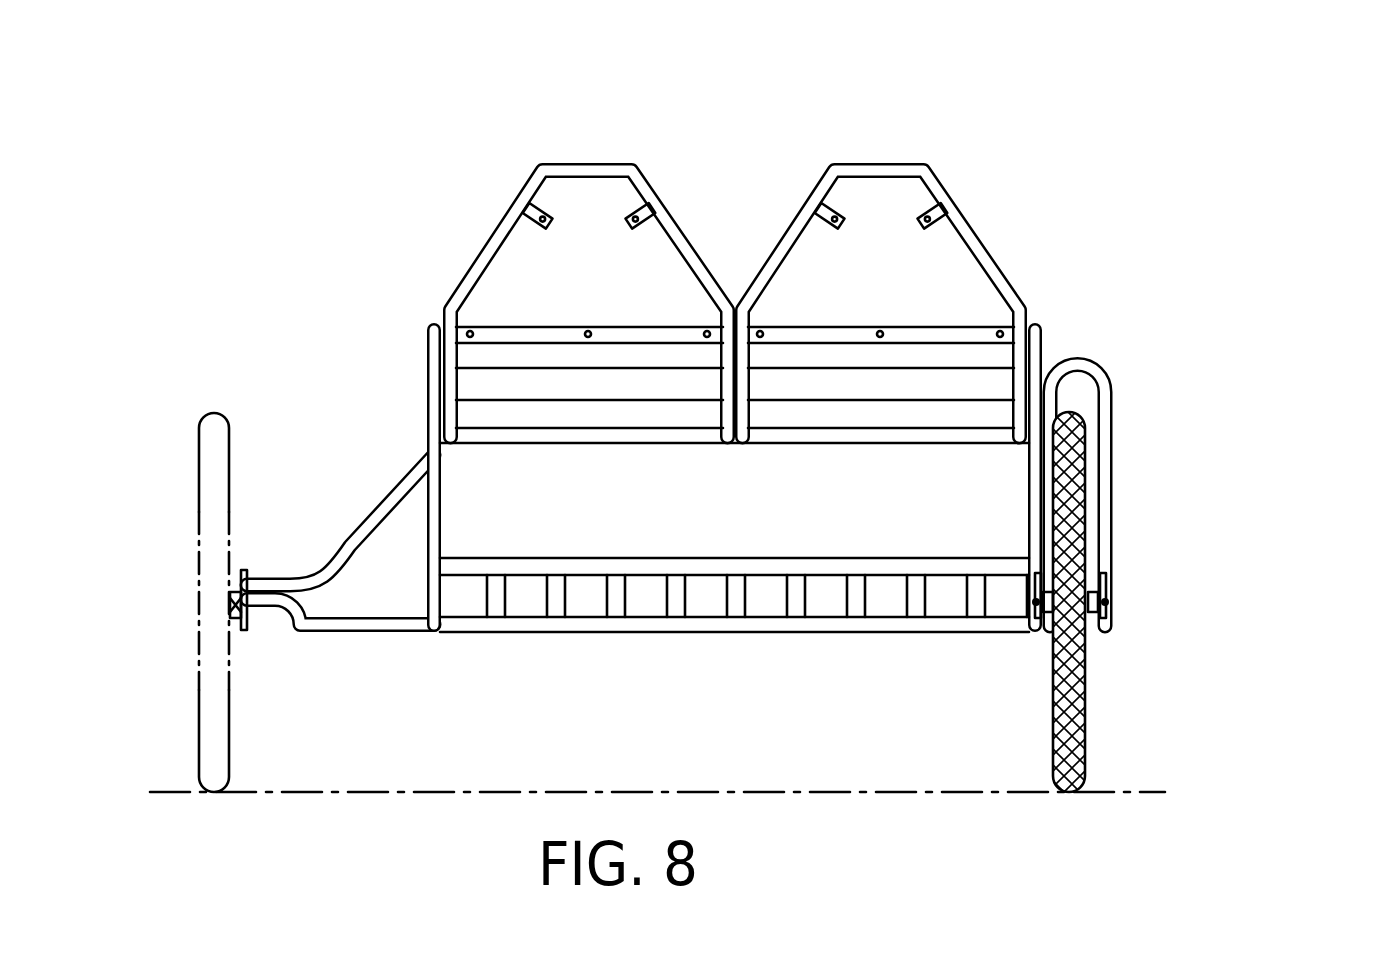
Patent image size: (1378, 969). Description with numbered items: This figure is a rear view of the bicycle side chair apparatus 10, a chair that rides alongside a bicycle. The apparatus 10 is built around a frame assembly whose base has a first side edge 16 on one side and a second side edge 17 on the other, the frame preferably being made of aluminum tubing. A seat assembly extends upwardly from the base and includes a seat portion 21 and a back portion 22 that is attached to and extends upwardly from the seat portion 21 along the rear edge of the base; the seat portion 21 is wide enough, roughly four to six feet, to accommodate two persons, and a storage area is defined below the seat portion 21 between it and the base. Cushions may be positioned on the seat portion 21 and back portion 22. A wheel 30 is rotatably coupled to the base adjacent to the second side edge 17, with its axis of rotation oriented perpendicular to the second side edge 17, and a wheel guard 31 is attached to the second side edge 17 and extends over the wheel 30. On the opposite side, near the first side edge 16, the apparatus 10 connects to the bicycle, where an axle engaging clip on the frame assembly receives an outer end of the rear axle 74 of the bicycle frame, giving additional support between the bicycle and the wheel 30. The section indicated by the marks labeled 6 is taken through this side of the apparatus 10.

The section line 6- 6 is at (260, 540).
The bicycle side chair apparatus 10 is at (1048, 540).
The first side edge 16 is at (440, 632).
The second side edge 17 is at (1037, 623).
The seat portion 21 is at (565, 443).
The back portion 22 is at (983, 238).
The wheel 30 is at (1077, 760).
The wheel guard 31 is at (1130, 362).
The rear axle 74 is at (252, 602).